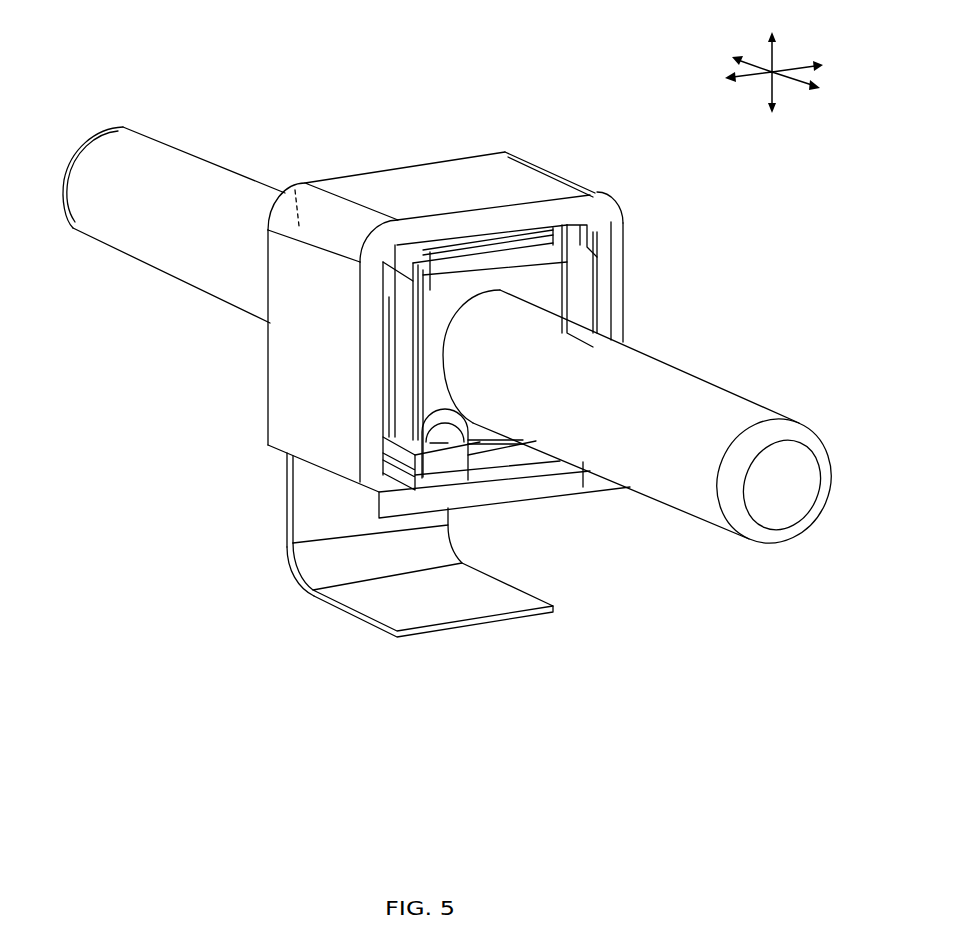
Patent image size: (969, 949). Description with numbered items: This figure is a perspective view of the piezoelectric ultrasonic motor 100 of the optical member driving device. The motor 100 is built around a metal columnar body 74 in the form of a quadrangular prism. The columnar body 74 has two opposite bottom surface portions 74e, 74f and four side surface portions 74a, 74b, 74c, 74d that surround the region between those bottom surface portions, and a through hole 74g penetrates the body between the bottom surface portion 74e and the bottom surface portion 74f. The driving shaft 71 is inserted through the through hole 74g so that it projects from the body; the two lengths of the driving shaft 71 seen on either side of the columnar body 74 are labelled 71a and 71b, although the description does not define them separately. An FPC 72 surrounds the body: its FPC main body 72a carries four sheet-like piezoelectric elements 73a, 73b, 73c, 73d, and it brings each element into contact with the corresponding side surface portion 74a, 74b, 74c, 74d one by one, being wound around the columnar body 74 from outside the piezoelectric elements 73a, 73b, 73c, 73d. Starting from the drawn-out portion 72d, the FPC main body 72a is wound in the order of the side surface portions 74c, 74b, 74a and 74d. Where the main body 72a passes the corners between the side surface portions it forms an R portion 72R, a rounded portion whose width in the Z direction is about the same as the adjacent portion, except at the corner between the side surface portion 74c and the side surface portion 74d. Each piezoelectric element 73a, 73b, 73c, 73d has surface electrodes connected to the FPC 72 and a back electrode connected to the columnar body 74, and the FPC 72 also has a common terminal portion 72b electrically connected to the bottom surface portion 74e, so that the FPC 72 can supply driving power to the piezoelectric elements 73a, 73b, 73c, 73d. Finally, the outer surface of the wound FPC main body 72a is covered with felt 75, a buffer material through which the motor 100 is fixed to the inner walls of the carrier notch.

The piezoelectric ultrasonic motor 100 is at (322, 104).
The driving shaft 71 is at (700, 497).
The first tube portion 71a is at (680, 412).
The second tube portion 71b is at (107, 128).
The FPC 72 is at (430, 401).
The FPC main body 72a is at (493, 272).
The common terminal portion 72b is at (288, 458).
The drawn-out portion 72d is at (373, 632).
The R portion 72R is at (594, 218).
The piezoelectric element 73a is at (462, 255).
The piezoelectric element 73b is at (583, 290).
The piezoelectric element 73c is at (516, 447).
The piezoelectric element 73d is at (397, 382).
The columnar body 74 is at (447, 303).
The side surface portion 74a is at (558, 233).
The side surface portion 74b is at (609, 305).
The side surface portion 74c is at (486, 445).
The side surface portion 74d is at (382, 283).
The bottom surface portion 74e is at (527, 293).
The bottom surface portion 74f is at (294, 188).
The through hole 74g is at (606, 336).
The felt 75 is at (438, 175).